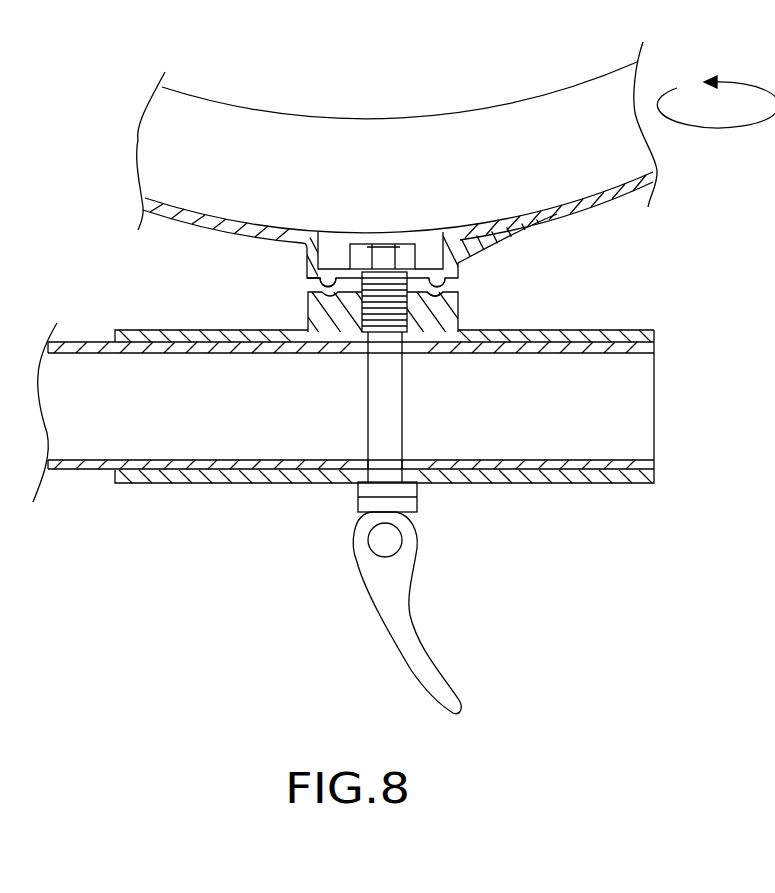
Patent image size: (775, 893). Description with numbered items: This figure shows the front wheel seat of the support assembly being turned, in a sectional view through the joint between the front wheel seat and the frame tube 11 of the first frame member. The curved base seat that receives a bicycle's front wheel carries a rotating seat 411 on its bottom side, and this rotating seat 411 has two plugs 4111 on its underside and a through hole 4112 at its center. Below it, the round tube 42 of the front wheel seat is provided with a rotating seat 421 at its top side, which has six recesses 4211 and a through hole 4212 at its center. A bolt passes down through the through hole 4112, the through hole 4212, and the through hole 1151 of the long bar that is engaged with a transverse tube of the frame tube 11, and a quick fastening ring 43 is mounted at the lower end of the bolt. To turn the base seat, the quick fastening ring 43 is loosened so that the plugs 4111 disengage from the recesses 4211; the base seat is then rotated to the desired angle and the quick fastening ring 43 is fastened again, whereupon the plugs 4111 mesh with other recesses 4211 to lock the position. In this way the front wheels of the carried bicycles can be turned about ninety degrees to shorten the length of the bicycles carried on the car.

The frame tube 11 is at (75, 470).
The through hole 1151 is at (347, 473).
The round tube 42 is at (643, 332).
The rotating seat 421 is at (307, 308).
The recesses 4211 is at (460, 305).
The through hole 4212 is at (307, 324).
The rotating seat 411 is at (518, 232).
The plugs 4111 is at (450, 292).
The through hole 4112 is at (307, 280).
The fastening device 43 is at (422, 562).